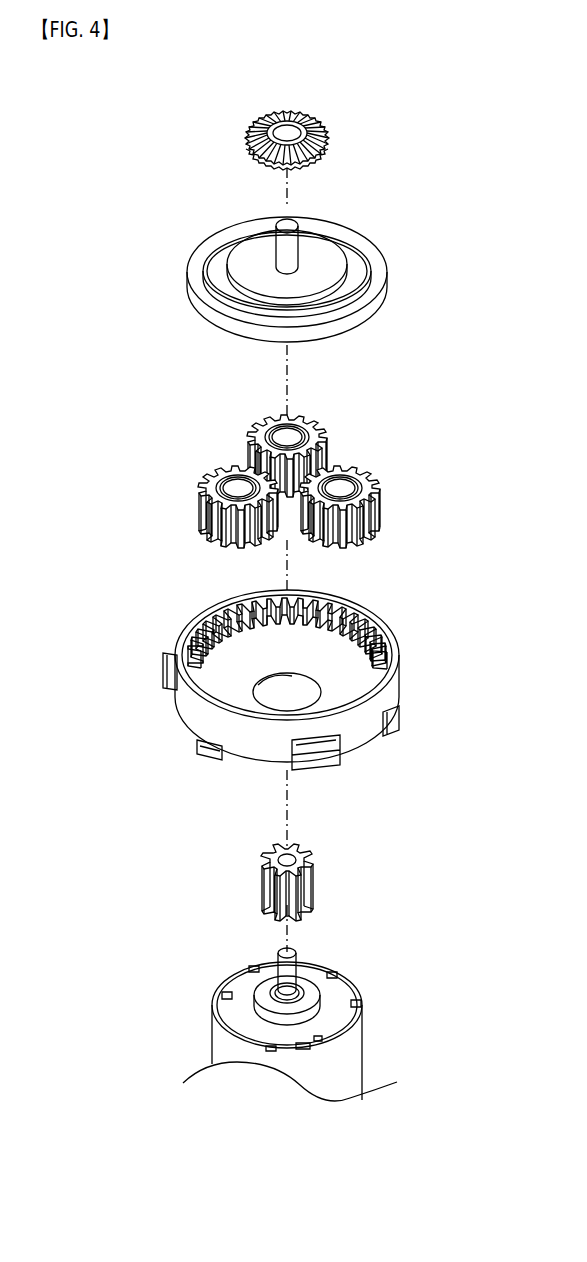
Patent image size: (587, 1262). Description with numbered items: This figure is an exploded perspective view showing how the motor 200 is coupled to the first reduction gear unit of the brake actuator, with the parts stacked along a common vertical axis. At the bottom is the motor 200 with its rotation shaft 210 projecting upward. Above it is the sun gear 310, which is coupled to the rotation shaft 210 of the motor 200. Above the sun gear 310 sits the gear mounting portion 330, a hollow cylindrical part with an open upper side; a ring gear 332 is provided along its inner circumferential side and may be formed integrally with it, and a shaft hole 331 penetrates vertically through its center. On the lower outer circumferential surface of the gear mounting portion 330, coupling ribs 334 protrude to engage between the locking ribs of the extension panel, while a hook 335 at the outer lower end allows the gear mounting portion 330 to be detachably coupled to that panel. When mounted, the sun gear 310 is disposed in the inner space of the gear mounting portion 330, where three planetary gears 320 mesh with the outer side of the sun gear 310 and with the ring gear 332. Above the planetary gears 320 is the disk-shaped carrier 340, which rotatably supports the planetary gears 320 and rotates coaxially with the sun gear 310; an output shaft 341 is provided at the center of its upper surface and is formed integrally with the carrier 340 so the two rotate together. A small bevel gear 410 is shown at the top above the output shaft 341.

The bevel gear 410 is at (330, 134).
The carrier 340 is at (372, 262).
The output shaft 341 is at (293, 225).
The planetary gears 320 is at (327, 434).
The gear mounting portion 330 is at (284, 680).
The ring gear 332 is at (352, 630).
The shaft hole 331 is at (283, 700).
The coupling ribs 334 is at (340, 758).
The hook 335 is at (196, 748).
The sun gear 310 is at (315, 871).
The motor 200 is at (300, 1024).
The rotation shaft 210 is at (296, 962).